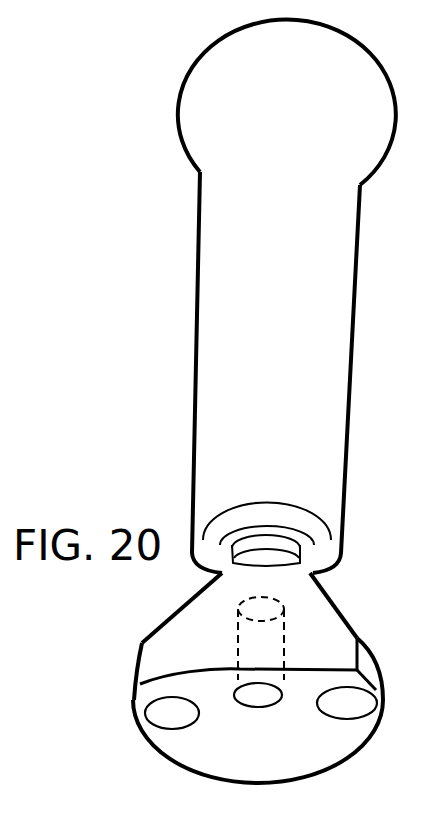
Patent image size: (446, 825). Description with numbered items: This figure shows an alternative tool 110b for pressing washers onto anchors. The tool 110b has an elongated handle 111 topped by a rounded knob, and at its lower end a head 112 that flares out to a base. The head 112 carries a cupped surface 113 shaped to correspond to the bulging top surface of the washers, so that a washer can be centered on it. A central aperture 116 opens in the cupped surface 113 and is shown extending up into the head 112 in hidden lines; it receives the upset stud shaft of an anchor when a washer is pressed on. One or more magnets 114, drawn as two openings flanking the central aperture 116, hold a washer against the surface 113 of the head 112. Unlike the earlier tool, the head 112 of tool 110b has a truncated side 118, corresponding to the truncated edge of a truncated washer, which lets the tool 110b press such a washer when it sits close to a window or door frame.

The alternative tool 110b is at (203, 221).
The handle 111 is at (203, 372).
The head 112 is at (142, 642).
The truncated side 118 is at (157, 648).
The cupped surface 113 is at (287, 762).
The magnets 114 is at (148, 718).
The central aperture 116 is at (250, 697).